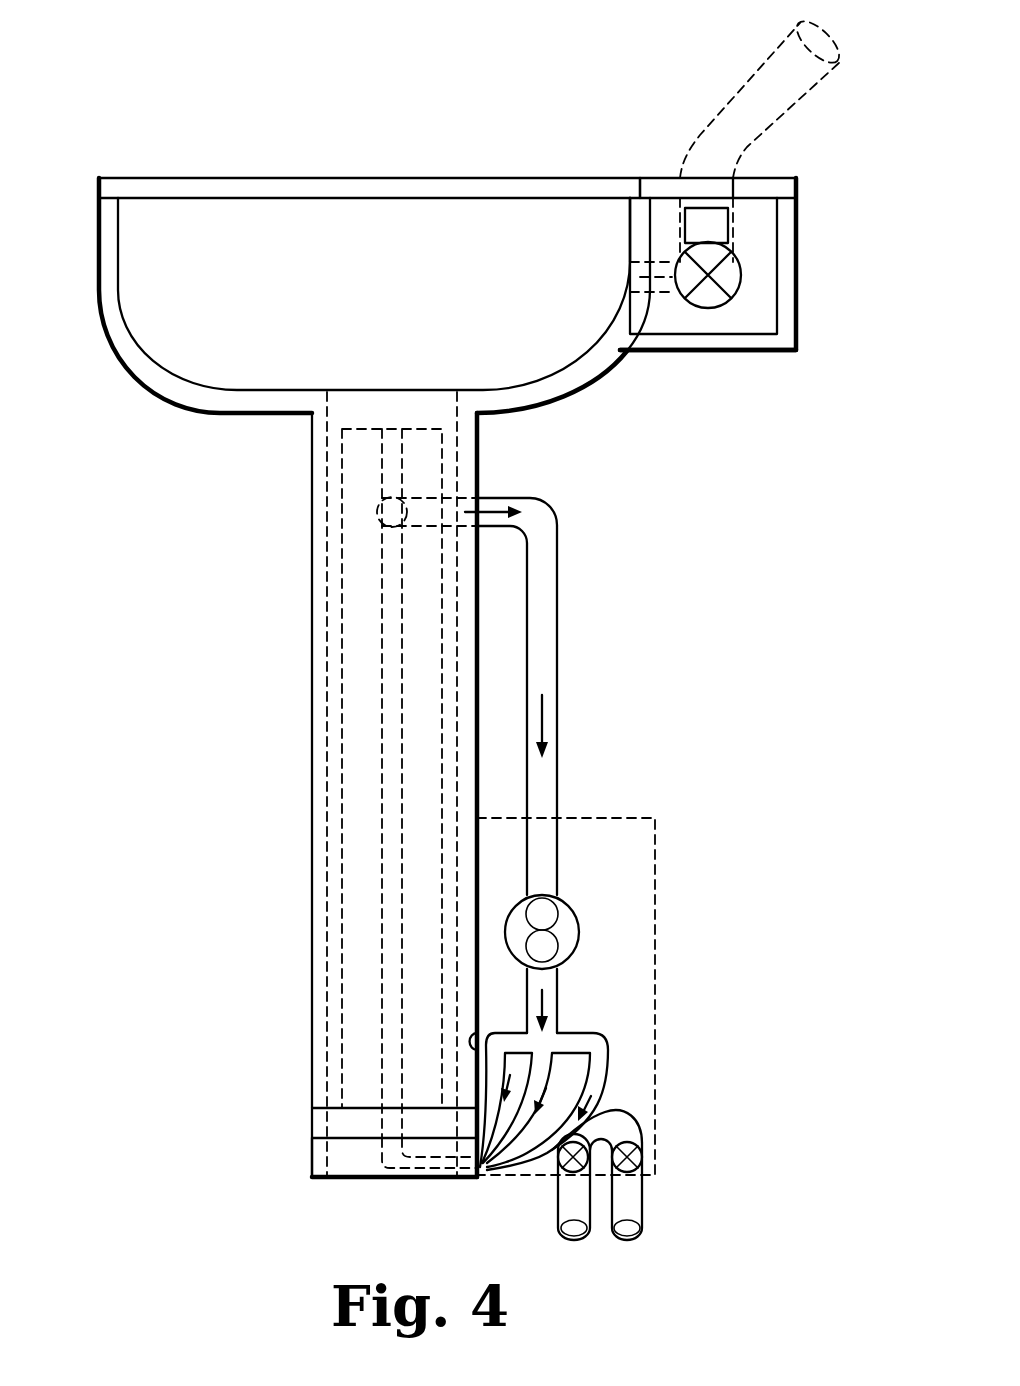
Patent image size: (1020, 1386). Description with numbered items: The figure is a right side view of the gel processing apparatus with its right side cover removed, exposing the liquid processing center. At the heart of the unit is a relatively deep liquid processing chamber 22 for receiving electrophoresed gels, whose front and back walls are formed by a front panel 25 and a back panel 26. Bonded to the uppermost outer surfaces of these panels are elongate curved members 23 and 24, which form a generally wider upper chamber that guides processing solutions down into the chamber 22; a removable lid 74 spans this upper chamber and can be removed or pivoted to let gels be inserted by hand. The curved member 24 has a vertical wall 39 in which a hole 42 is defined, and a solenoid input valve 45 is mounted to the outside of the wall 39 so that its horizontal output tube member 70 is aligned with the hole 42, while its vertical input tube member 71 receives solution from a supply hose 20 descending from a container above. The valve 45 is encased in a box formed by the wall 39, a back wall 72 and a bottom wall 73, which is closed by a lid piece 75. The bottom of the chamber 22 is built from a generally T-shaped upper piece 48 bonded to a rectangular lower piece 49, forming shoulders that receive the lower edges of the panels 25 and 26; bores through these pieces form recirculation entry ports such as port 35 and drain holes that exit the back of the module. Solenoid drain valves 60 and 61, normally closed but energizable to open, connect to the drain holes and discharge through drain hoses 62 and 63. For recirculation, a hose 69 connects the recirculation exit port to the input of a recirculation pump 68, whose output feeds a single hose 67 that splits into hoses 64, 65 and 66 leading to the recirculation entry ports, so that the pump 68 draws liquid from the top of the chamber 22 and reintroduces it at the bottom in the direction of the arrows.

The hose 20 is at (753, 70).
The liquid processing chamber 22 is at (393, 360).
The curved member 23 is at (120, 340).
The curved member 24 is at (590, 388).
The front panel 25 is at (318, 458).
The back panel 26 is at (463, 443).
The recirculation entry port 35 is at (387, 1133).
The vertical wall 39 is at (638, 213).
The hole 42 is at (614, 279).
The solenoid input valve 45 is at (718, 306).
The upper piece 48 is at (312, 1117).
The lower piece 49 is at (360, 1170).
The solenoid drain valve 60 is at (558, 1177).
The solenoid drain valve 61 is at (648, 1140).
The drain hose 62 is at (568, 1198).
The drain hose 63 is at (642, 1198).
The hose 64 is at (478, 1040).
The hose 65 is at (548, 1073).
The hose 66 is at (613, 1080).
The single hose 67 is at (558, 1020).
The recirculation pump 68 is at (580, 923).
The hose 69 is at (560, 625).
The horizontal output tube member 70 is at (662, 290).
The vertical input tube member 71 is at (722, 228).
The back wall 72 is at (790, 253).
The bottom wall 73 is at (770, 345).
The removable lid 74 is at (322, 180).
The lid piece 75 is at (770, 190).